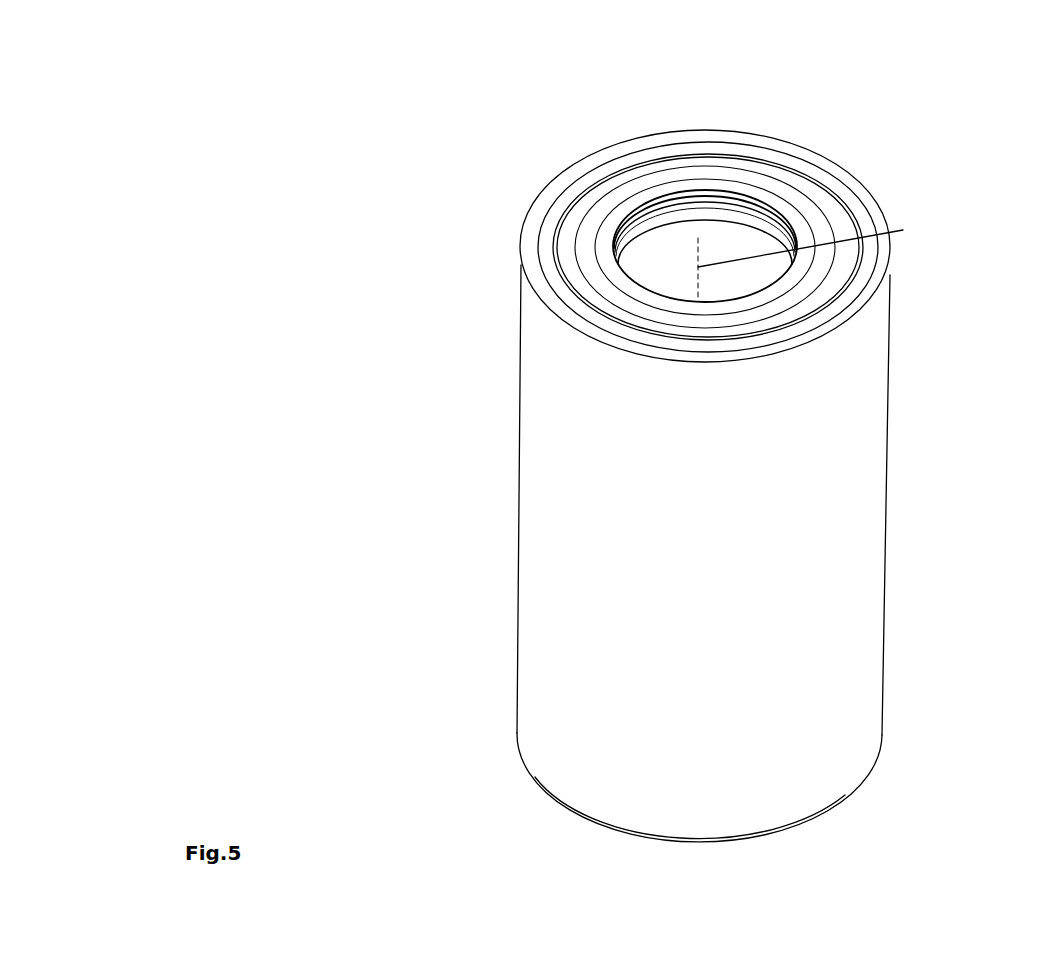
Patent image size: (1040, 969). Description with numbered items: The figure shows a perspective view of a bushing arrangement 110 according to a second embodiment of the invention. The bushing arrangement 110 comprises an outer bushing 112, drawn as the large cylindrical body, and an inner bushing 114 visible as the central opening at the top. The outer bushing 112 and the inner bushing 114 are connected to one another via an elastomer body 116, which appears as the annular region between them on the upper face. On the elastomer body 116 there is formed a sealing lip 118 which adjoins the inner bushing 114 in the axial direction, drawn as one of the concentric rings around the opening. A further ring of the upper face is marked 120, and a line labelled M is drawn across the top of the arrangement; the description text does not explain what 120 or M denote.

The bushing arrangement 110 is at (878, 121).
The outer bushing 112 is at (567, 392).
The inner bushing 114 is at (705, 228).
The elastomer body 116 is at (577, 268).
The sealing lip 118 is at (642, 188).
The chamfered rim edge 120 is at (563, 225).
The central axis M is at (903, 230).